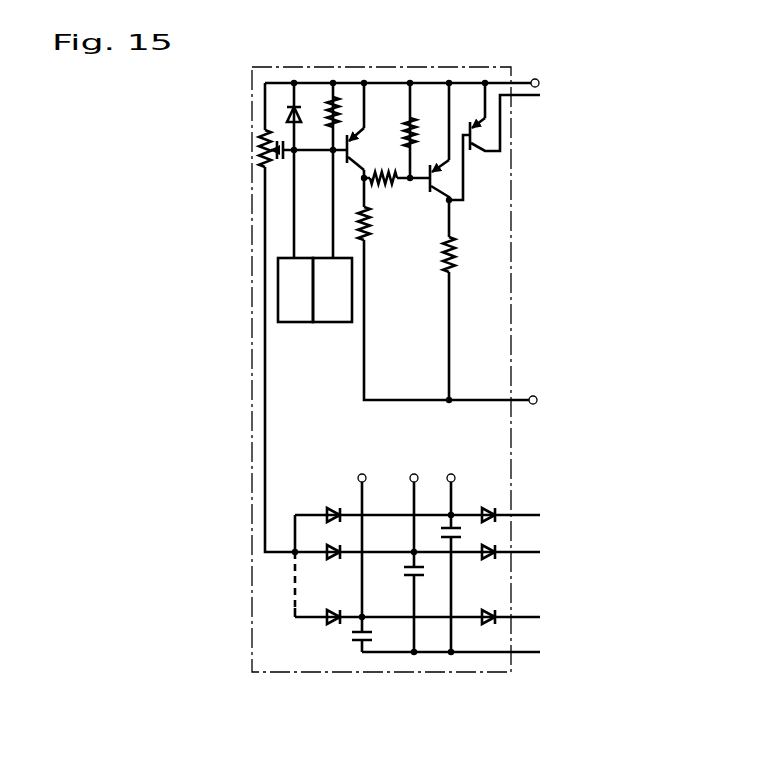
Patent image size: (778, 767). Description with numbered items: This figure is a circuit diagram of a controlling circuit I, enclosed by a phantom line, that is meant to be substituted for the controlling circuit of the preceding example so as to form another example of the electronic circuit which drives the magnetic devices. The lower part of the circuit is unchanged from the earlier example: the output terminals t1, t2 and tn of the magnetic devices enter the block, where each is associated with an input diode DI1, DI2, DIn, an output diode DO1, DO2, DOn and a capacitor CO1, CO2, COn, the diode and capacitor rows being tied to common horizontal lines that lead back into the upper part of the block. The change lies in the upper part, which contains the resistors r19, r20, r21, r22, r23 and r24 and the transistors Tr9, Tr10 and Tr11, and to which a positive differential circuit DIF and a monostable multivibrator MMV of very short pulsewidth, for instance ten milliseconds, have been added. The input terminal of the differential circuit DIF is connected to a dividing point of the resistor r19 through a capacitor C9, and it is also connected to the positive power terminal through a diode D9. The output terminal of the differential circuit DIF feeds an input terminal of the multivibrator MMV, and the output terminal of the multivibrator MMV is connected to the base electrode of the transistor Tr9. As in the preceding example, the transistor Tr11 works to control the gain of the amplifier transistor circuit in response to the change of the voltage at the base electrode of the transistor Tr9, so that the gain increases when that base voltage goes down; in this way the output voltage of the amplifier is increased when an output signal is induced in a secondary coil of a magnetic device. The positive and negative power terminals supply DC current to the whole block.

The controlling circuit I is at (302, 72).
The resistor r19 is at (257, 150).
The capacitor C9 is at (281, 161).
The diode D9 is at (288, 113).
The resistor r20 is at (330, 118).
The transistor Tr9 is at (358, 151).
The resistor r23 is at (416, 136).
The resistor r22 is at (388, 187).
The resistor r21 is at (380, 232).
The transistor Tr10 is at (438, 197).
The resistor r24 is at (456, 249).
The transistor Tr11 is at (478, 149).
The positive differential circuit DIF is at (295, 290).
The monostable multivibrator MMV is at (332, 290).
The output terminal tn is at (364, 474).
The output terminal t2 is at (423, 460).
The output terminal t1 is at (453, 474).
The diode DI1 is at (333, 511).
The diode DI2 is at (333, 550).
The diode DIn is at (333, 615).
The capacitor CO1 is at (441, 532).
The capacitor CO2 is at (412, 571).
The capacitor COn is at (352, 642).
The diode DO1 is at (484, 508).
The diode DO2 is at (484, 559).
The diode DOn is at (484, 610).